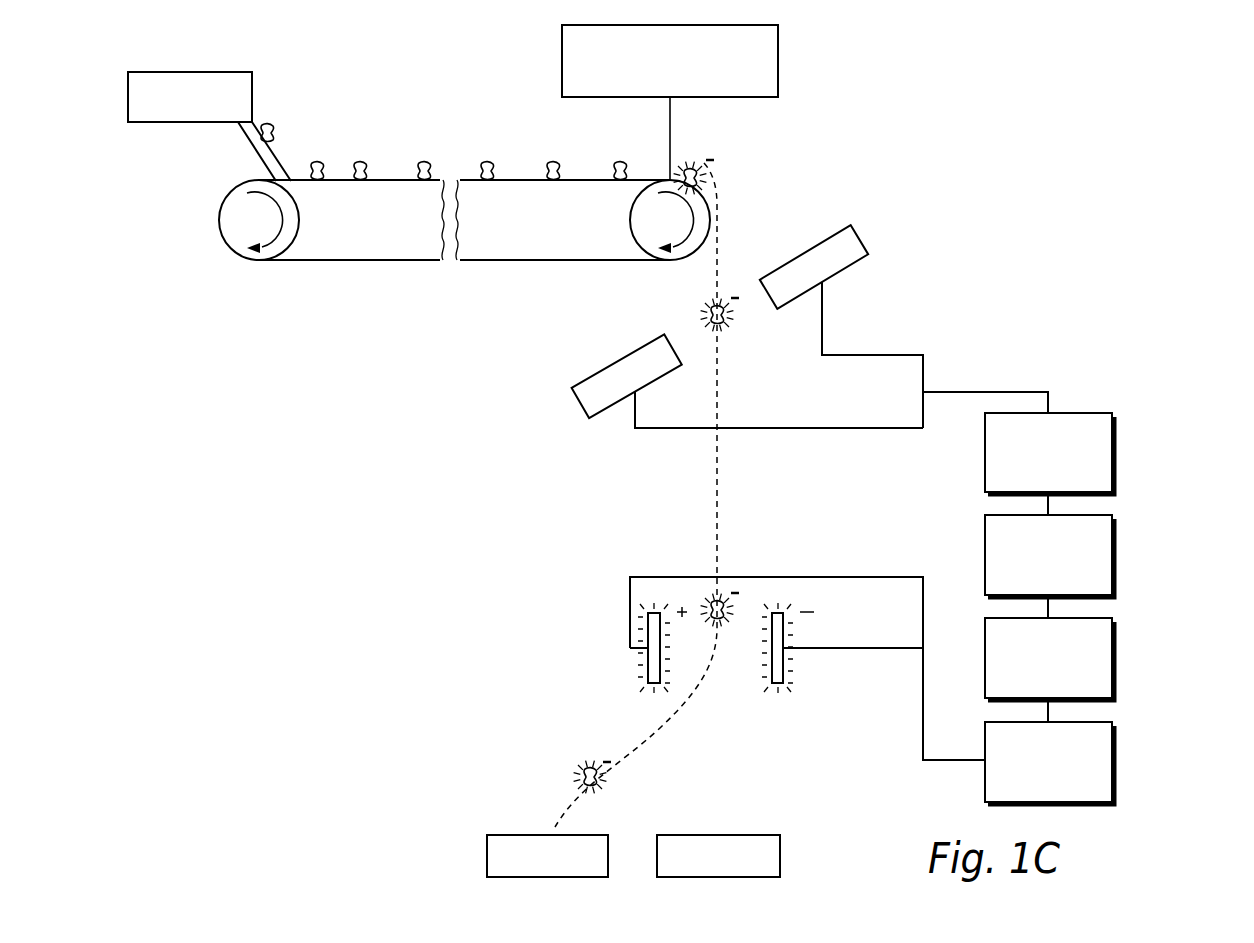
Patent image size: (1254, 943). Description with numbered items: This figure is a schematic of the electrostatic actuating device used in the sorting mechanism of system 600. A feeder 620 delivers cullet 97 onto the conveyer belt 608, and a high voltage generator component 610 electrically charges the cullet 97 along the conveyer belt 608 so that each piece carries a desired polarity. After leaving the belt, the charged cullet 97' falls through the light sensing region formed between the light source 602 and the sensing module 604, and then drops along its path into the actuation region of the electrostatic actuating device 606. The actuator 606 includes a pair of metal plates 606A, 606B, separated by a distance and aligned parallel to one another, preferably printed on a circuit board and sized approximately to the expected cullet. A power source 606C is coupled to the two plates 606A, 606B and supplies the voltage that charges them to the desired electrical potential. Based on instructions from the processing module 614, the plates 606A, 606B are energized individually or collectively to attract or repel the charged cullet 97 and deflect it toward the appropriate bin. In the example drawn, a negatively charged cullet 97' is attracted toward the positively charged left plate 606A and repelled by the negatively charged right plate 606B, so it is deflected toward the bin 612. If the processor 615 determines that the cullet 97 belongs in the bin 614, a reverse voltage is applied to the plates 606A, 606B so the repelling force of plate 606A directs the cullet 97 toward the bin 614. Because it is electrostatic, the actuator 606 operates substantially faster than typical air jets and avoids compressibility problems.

The system 600 is at (1177, 115).
The feeder 620 is at (196, 72).
The cullet 97 is at (469, 145).
The charged cullet 97' is at (558, 766).
The conveyer belt 608 is at (370, 261).
The high voltage generator component 610 is at (778, 57).
The sensing module 604 is at (863, 233).
The light source 602 is at (612, 359).
The bin 612 is at (1116, 450).
The processing module 614 is at (1116, 552).
The processor 615 is at (1116, 657).
The electrostatic actuating device 606 is at (734, 668).
The left metal plate 606A is at (644, 666).
The right metal plate 606B is at (790, 678).
The power source 606C is at (1116, 762).